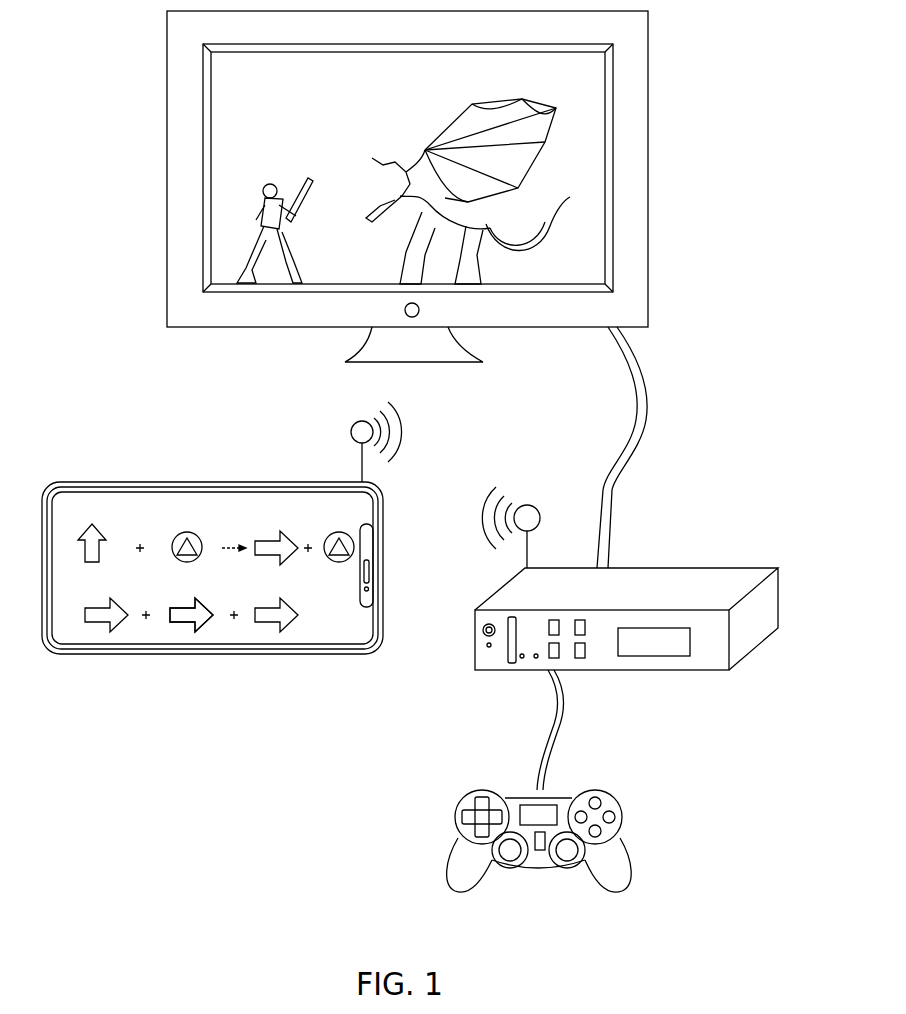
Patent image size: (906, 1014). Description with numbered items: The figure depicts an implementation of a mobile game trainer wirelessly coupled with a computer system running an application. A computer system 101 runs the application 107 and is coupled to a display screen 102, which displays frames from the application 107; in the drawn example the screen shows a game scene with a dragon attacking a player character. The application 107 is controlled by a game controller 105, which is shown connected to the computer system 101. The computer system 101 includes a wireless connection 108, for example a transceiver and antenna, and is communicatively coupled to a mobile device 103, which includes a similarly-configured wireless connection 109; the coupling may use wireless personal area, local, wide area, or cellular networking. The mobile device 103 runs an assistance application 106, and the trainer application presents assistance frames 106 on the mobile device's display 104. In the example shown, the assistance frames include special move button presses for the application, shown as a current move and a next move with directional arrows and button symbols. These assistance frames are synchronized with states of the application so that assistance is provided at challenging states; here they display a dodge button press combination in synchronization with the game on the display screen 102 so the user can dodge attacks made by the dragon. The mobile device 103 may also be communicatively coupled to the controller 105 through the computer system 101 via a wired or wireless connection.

The computer system 101 is at (748, 566).
The display screen 102 is at (648, 158).
The mobile device 103 is at (97, 481).
The mobile device's display 104 is at (339, 632).
The game controller 105 is at (598, 785).
The assistance application / assistance frames 106 is at (180, 636).
The application 107 is at (583, 92).
The wireless connection 108 is at (533, 545).
The wireless connection 109 is at (353, 462).